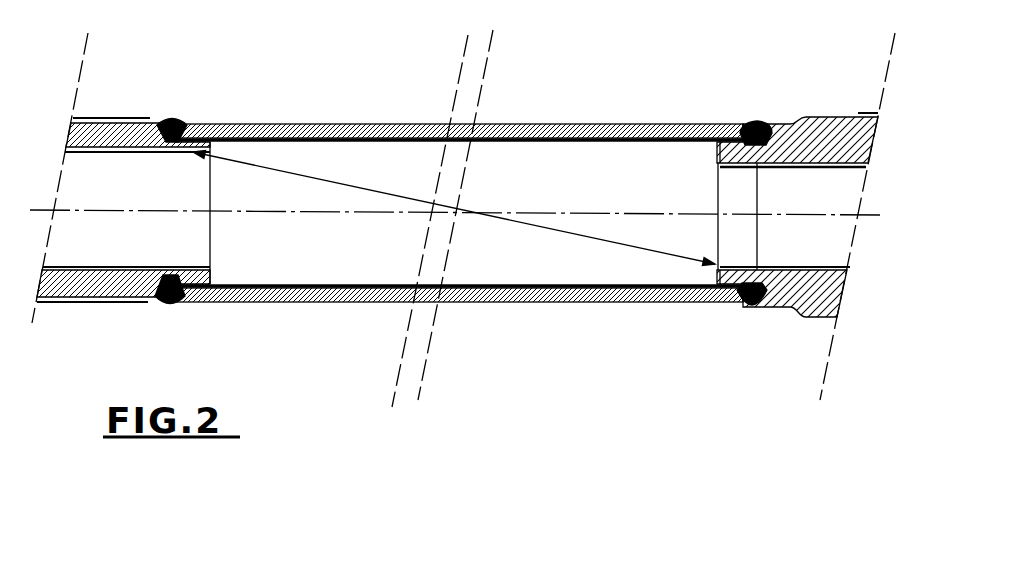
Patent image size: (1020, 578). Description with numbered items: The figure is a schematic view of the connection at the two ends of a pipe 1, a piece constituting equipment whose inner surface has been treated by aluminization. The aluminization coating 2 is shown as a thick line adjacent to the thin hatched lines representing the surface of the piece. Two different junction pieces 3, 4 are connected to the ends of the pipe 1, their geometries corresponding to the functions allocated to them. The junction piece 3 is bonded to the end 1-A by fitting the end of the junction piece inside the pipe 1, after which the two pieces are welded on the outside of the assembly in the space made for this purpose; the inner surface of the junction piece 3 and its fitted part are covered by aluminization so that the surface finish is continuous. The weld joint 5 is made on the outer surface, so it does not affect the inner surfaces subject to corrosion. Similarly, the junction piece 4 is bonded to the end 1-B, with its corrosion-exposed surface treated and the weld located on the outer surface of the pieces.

The pipe 1 is at (457, 231).
The end of pipe 1-A is at (195, 201).
The end of pipe 1-B is at (714, 201).
The aluminization coating 2 is at (470, 281).
The junction piece 3 is at (123, 228).
The junction piece 4 is at (797, 230).
The weld joint 5 is at (175, 115).